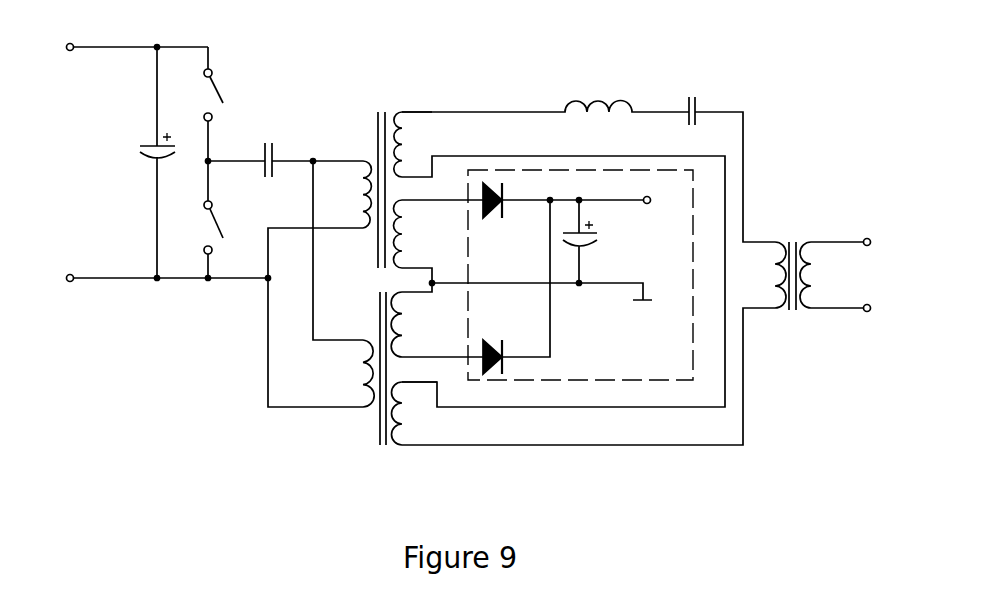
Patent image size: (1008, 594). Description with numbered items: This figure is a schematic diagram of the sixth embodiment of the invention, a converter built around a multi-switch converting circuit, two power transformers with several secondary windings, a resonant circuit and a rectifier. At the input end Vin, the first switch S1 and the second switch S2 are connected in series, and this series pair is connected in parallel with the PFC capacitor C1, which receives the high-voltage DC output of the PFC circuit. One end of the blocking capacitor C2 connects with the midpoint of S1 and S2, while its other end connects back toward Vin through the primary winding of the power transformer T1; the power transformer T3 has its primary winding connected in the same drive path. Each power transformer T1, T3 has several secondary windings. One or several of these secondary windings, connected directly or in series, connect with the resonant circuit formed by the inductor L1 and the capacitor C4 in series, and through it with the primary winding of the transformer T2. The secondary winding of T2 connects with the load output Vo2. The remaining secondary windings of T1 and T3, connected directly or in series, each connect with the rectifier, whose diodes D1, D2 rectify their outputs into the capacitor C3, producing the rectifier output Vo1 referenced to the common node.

The input end Vin is at (150, 161).
The PFC capacitor C1 is at (142, 162).
The first switch S1 is at (222, 124).
The second switch S2 is at (222, 239).
The blocking capacitor C2 is at (260, 153).
The power transformer T1 is at (496, 250).
The power transformer T3 is at (569, 382).
The resonant inductor L1 is at (545, 98).
The resonant capacitor C4 is at (729, 158).
The rectifier diode D1 is at (565, 212).
The rectifier diode D2 is at (516, 287).
The rectifier output capacitor C3 is at (590, 243).
The rectifier output Vo1 is at (666, 201).
The power transformer T2 is at (819, 267).
The load output Vo2 is at (883, 272).